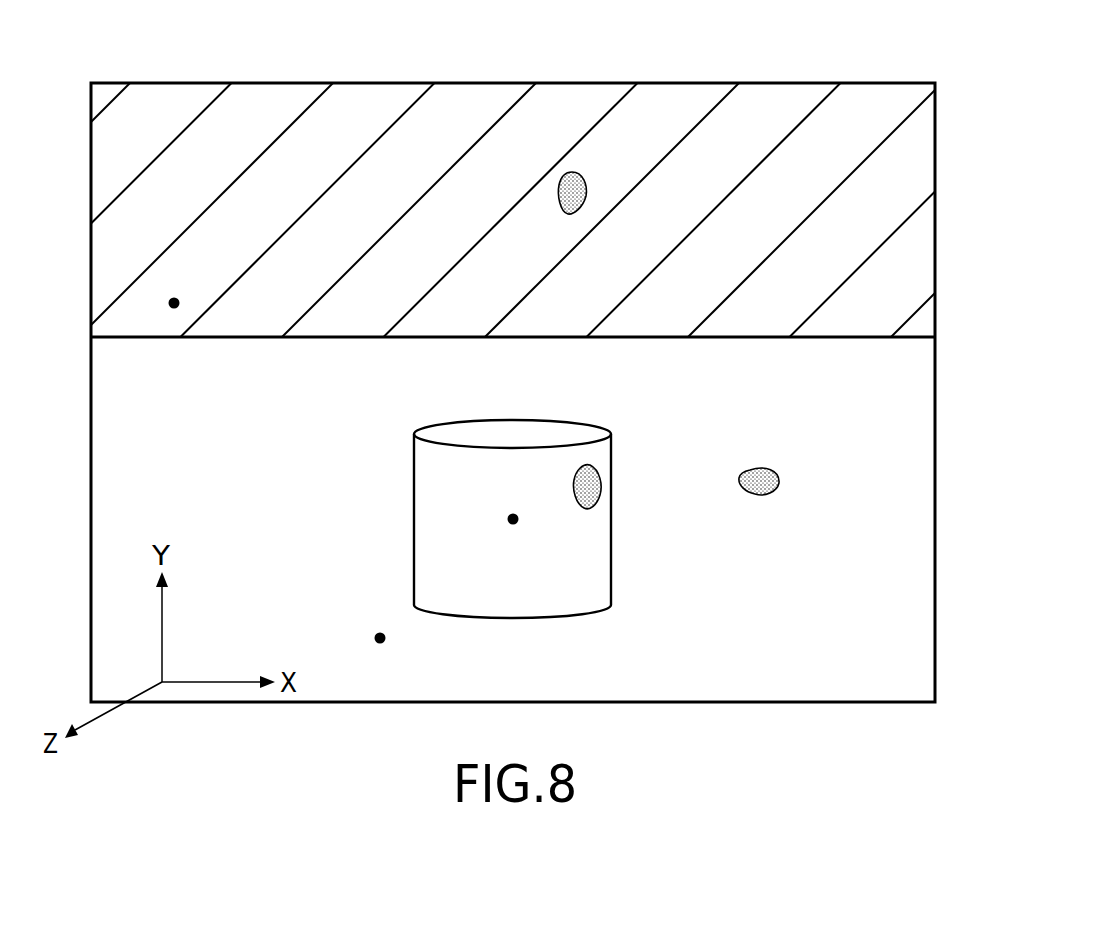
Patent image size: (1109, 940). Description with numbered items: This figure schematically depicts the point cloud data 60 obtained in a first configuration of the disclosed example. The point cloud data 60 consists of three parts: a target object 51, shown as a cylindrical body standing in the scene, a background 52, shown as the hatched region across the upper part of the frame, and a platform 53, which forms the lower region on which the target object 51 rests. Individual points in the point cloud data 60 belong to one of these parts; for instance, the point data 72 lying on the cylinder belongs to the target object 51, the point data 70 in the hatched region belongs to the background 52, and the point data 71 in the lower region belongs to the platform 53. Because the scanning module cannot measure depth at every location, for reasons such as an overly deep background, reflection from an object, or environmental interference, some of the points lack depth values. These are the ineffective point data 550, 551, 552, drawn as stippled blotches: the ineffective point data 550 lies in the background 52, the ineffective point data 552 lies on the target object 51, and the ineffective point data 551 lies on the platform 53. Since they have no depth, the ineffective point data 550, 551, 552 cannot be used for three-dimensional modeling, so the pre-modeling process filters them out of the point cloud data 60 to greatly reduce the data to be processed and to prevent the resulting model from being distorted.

The point cloud data 60 is at (710, 70).
The background 52 is at (860, 97).
The platform 53 is at (860, 687).
The target object 51 is at (592, 414).
The ineffective point data 550 is at (581, 173).
The ineffective point data 551 is at (780, 475).
The ineffective point data 552 is at (600, 490).
The point data 70 is at (173, 312).
The point data 71 is at (375, 637).
The point data 72 is at (508, 519).